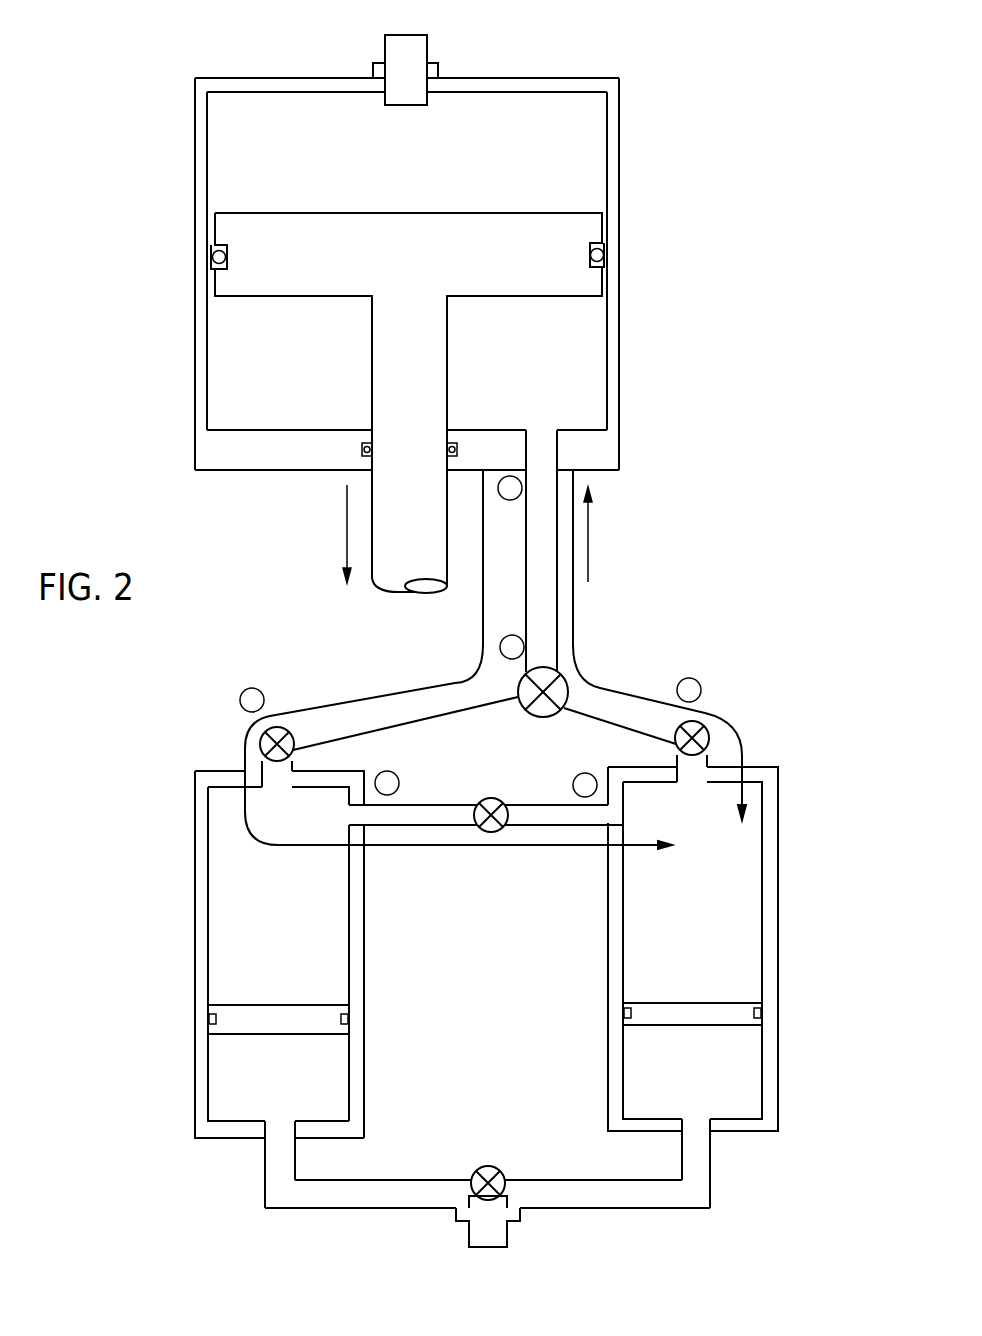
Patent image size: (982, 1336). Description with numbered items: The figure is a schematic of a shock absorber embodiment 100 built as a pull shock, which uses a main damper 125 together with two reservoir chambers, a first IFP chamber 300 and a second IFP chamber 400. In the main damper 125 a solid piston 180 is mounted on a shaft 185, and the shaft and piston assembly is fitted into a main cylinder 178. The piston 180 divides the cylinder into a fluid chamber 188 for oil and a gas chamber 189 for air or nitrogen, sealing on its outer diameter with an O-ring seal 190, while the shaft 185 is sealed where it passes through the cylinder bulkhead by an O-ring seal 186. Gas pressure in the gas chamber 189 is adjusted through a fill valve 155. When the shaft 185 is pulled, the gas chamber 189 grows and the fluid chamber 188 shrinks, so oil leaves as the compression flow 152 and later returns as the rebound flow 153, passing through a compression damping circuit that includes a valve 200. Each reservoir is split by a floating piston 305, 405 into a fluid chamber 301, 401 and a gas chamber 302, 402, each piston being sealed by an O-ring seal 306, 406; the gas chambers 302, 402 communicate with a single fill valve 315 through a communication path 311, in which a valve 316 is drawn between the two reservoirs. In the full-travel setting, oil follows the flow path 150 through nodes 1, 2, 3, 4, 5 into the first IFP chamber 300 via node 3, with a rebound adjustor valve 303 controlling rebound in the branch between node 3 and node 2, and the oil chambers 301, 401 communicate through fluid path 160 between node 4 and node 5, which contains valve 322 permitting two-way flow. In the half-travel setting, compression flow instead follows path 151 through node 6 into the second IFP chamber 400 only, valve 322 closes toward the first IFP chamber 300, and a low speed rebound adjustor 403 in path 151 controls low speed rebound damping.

The shock absorber embodiment 100 is at (607, 36).
The main damper 125 is at (628, 180).
The main cylinder 178 is at (196, 130).
The fill valve 155 is at (407, 34).
The piston 180 is at (241, 238).
The O-ring seal 190 is at (604, 249).
The gas chamber 189 is at (392, 185).
The fluid chamber 188 is at (519, 365).
The shaft 185 is at (393, 378).
The O-ring seal 186 is at (362, 449).
The compression flow arrow 152 is at (347, 533).
The rebound flow 153 is at (588, 532).
The path 151 is at (573, 614).
The full-travel mode flow path 150 is at (391, 694).
The valve 200 is at (541, 716).
The rebound adjustor valve 303 is at (294, 743).
The low speed rebound adjustor 403 is at (676, 729).
The fluid path 160 is at (433, 813).
The valve 322 is at (492, 799).
The first IFP chamber 300 is at (192, 868).
The fluid chamber 301 is at (255, 903).
The gas chamber 302 is at (258, 1082).
The floating piston 305 is at (312, 1016).
The O-ring seal 306 is at (210, 1018).
The second IFP chamber 400 is at (778, 895).
The fluid chamber 401 is at (680, 903).
The gas chamber 402 is at (678, 1082).
The floating piston 405 is at (742, 1010).
The O-ring seal 406 is at (627, 1012).
The communication path 311 is at (657, 1193).
The bottom conduit valve 316 is at (488, 1166).
The fill valve 315 is at (488, 1249).
The node 1 is at (510, 488).
The node 2 is at (512, 647).
The node 3 is at (252, 700).
The node 4 is at (387, 783).
The node 5 is at (585, 785).
The node 6 is at (689, 690).